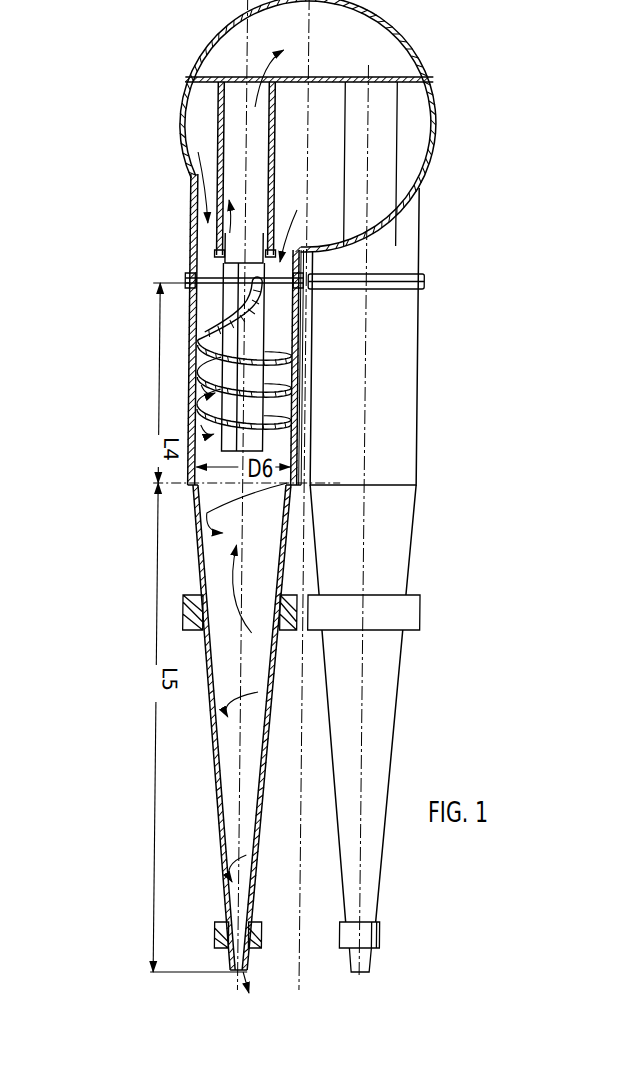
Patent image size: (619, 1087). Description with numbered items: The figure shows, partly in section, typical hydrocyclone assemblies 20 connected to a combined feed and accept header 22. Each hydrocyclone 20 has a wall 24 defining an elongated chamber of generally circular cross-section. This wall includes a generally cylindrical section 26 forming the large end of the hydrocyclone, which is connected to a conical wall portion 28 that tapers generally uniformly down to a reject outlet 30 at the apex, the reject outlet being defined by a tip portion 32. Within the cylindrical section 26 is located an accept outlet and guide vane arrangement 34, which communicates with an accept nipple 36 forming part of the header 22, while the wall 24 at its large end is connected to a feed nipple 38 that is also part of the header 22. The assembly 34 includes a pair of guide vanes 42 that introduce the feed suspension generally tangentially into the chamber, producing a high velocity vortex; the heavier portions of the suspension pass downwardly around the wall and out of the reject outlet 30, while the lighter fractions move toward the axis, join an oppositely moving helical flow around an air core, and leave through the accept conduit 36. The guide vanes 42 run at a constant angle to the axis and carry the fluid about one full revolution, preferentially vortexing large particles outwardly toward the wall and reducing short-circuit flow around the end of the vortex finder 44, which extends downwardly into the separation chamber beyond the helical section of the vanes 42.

The hydrocyclone assembly 20 is at (139, 423).
The combined feed and accept header 22 is at (407, 28).
The wall 24 is at (195, 328).
The cylindrical section 26 is at (191, 397).
The conical wall portion 28 is at (198, 558).
The reject outlet 30 is at (248, 975).
The tip portion 32 is at (226, 948).
The accept outlet and guide vane arrangement 34 is at (272, 335).
The accept nipple 36 is at (212, 132).
The feed nipple 38 is at (190, 232).
The guide vanes 42 is at (276, 370).
The vortex finder 44 is at (262, 438).